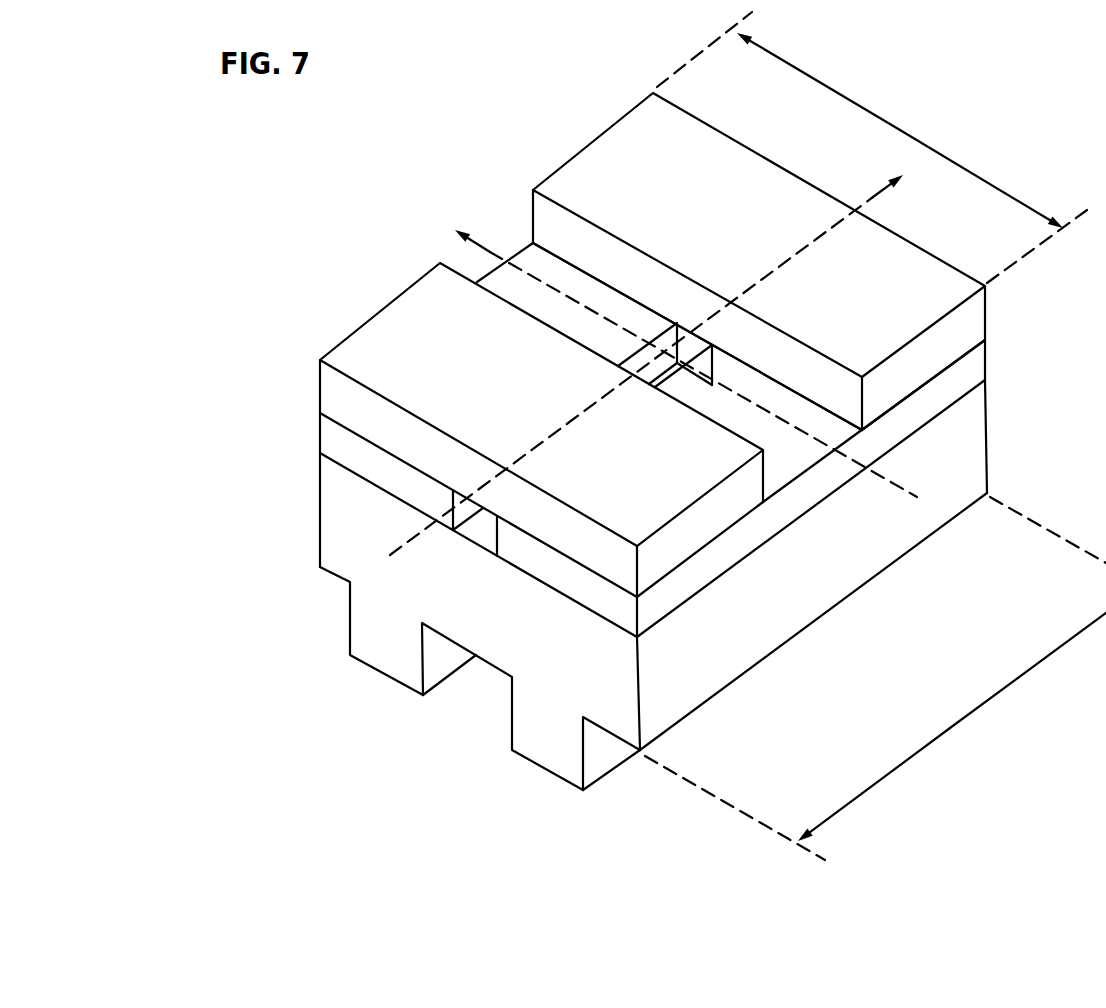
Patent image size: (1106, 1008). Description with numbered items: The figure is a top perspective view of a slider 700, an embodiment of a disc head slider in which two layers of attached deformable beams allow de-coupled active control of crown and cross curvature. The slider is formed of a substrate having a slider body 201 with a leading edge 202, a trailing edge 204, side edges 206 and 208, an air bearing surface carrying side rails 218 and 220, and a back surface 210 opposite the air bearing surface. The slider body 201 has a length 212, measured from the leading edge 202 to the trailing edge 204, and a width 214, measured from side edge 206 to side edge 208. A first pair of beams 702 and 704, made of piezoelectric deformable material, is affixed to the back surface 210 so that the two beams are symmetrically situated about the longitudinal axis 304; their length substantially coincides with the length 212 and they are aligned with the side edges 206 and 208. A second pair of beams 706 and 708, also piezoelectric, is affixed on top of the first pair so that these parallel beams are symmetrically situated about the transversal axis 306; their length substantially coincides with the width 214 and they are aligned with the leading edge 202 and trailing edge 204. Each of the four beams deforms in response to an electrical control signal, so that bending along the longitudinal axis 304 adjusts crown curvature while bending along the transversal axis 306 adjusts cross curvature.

The slider body 201 is at (362, 614).
The leading edge 202 is at (913, 242).
The trailing edge 204 is at (320, 567).
The side edge 206 is at (660, 700).
The side edge 208 is at (322, 492).
The back surface 210 is at (320, 438).
The length 212 is at (995, 697).
The width 214 is at (858, 107).
The side rail 218 is at (547, 765).
The side rail 220 is at (380, 668).
The longitudinal axis 304 is at (873, 197).
The transversal axis 306 is at (499, 247).
The slider 700 is at (532, 134).
The beam 702 is at (977, 357).
The beam 704 is at (333, 432).
The beam 706 is at (977, 312).
The beam 708 is at (330, 377).